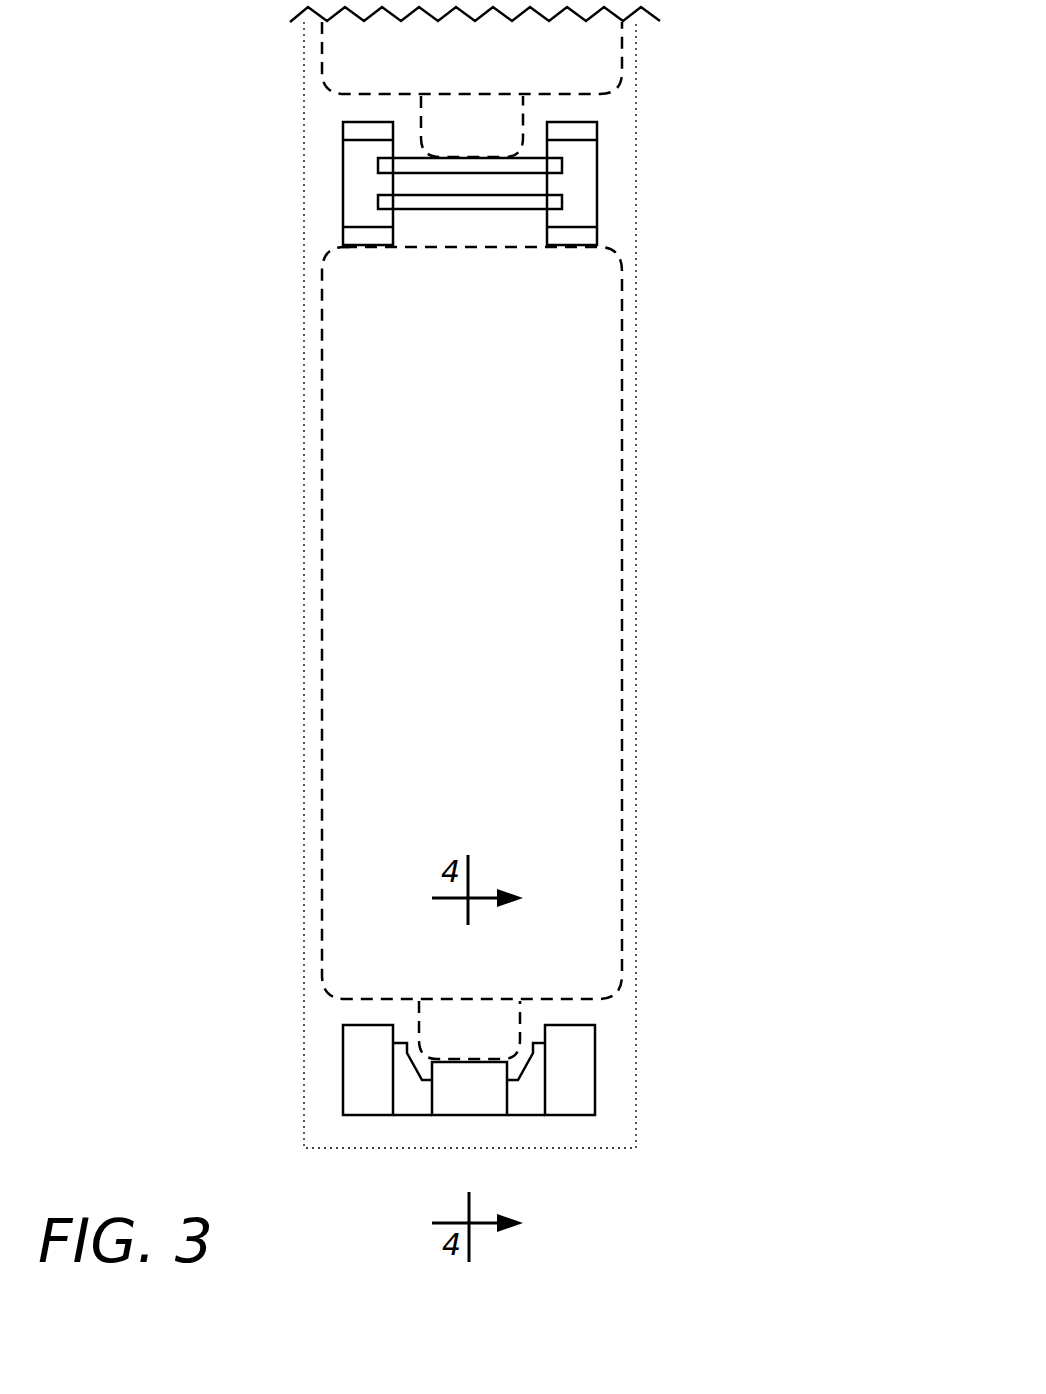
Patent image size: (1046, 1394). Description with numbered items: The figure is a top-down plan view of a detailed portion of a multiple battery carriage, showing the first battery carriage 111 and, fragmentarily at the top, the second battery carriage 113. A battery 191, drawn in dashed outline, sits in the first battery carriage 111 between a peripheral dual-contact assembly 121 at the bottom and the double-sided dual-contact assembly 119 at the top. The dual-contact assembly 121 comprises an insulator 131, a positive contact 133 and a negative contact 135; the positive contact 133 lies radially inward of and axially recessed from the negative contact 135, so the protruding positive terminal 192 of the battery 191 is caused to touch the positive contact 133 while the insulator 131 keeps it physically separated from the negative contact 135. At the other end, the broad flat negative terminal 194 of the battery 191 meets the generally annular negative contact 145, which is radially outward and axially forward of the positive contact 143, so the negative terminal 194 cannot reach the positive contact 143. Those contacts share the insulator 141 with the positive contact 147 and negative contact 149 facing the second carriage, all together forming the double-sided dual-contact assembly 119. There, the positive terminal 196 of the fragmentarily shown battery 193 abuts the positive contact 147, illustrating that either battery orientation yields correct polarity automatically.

The first battery carriage 111 is at (818, 288).
The second battery carriage 113 is at (752, 48).
The double-sided dual-contact assembly 119 is at (432, 169).
The dual-contact assembly 121 is at (437, 1118).
The insulator 131 is at (405, 1115).
The positive contact 133 is at (458, 1115).
The negative contact 135 is at (343, 1063).
The insulator 141 is at (597, 175).
The positive contact 143 is at (597, 198).
The negative contact 145 is at (343, 235).
The positive contact 147 is at (597, 157).
The negative contact 149 is at (343, 128).
The battery 191 is at (318, 622).
The positive terminal 192 is at (419, 1018).
The battery 193 is at (318, 47).
The negative terminal 194 is at (343, 247).
The positive terminal 196 is at (420, 112).